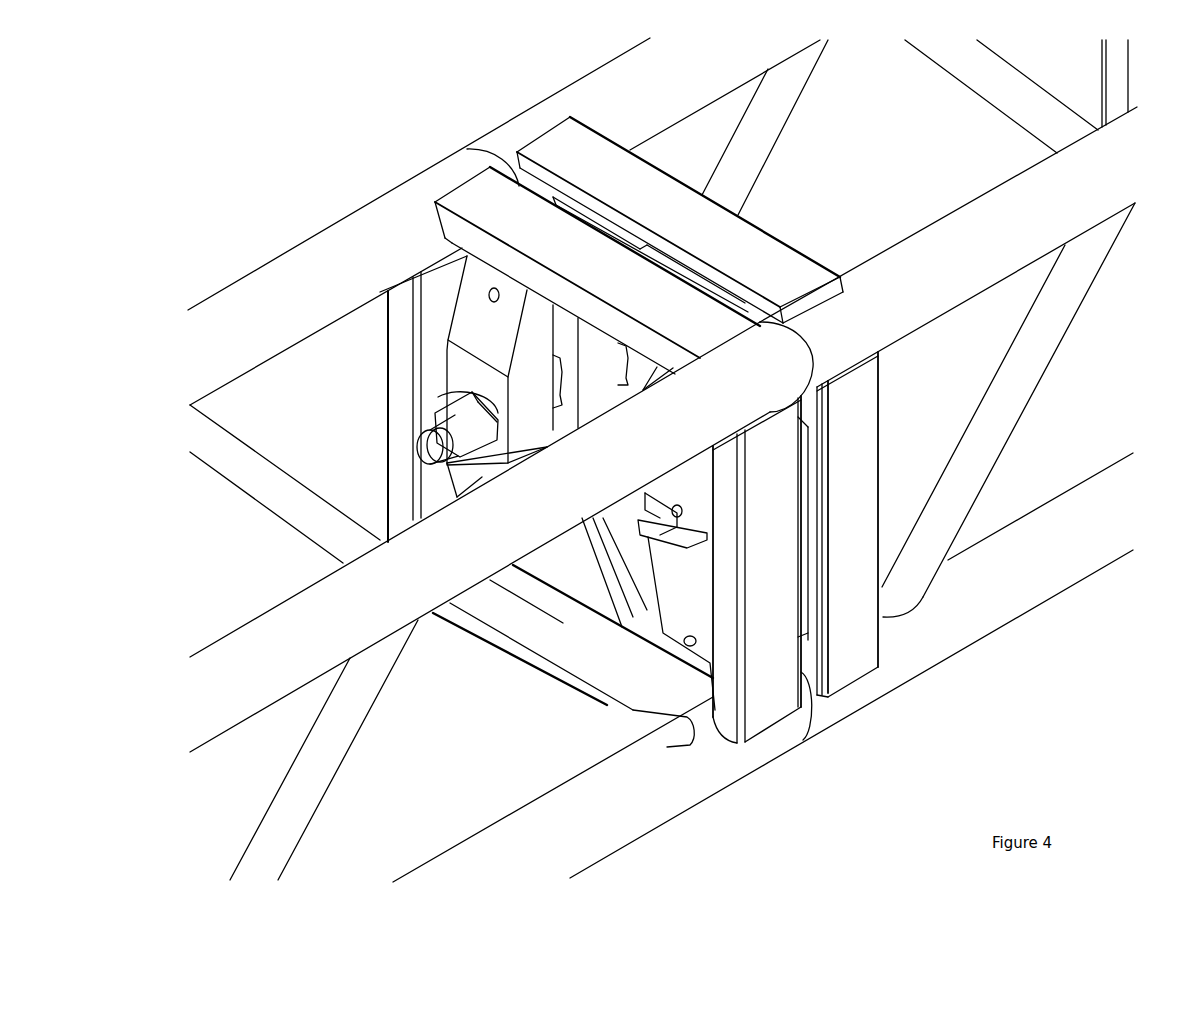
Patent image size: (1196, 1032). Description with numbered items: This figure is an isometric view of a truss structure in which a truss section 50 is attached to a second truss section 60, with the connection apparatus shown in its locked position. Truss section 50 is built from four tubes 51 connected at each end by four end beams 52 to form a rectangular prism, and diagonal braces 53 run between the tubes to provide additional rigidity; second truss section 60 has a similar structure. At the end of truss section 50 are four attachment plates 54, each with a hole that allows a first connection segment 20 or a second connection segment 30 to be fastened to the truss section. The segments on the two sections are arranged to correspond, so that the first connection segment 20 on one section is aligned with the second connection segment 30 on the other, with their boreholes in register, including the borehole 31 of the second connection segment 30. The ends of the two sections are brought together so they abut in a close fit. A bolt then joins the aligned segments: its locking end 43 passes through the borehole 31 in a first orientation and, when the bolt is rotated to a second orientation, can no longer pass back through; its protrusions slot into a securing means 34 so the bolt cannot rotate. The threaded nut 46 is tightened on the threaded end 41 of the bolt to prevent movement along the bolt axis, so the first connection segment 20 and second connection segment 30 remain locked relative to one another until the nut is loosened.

The first connection segment 20 is at (463, 399).
The second connection segment 30 is at (613, 367).
The borehole 31 is at (560, 368).
The securing means 34 is at (706, 565).
The threaded end 41 is at (442, 428).
The locking end 43 is at (657, 537).
The threaded nut 46 is at (452, 402).
The truss section 50 is at (1062, 633).
The tube 51 is at (662, 460).
The end beam 52 is at (656, 430).
The diagonal brace 53 is at (662, 460).
The attachment plate 54 is at (565, 568).
The second truss section 60 is at (293, 217).